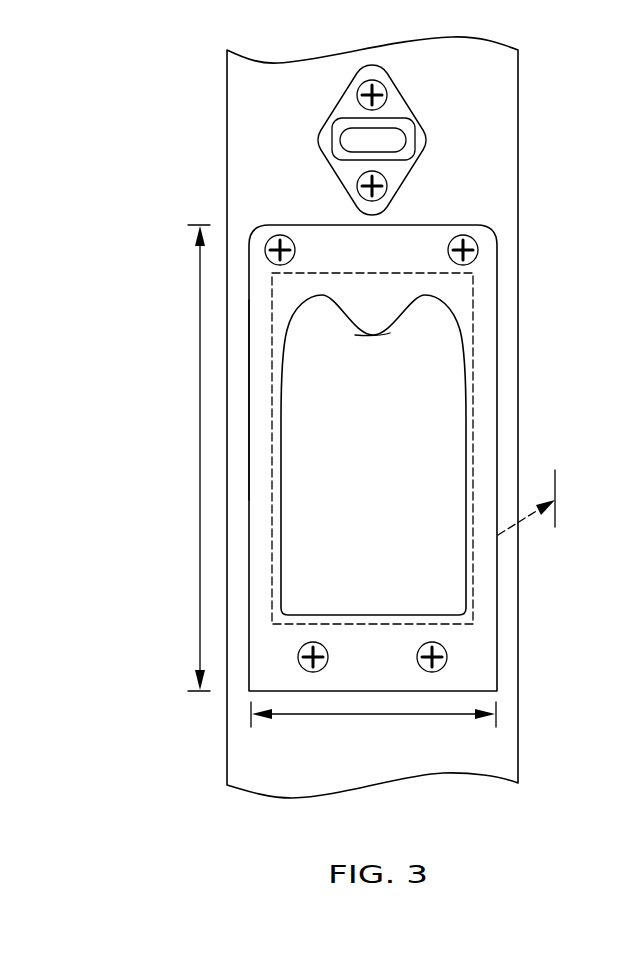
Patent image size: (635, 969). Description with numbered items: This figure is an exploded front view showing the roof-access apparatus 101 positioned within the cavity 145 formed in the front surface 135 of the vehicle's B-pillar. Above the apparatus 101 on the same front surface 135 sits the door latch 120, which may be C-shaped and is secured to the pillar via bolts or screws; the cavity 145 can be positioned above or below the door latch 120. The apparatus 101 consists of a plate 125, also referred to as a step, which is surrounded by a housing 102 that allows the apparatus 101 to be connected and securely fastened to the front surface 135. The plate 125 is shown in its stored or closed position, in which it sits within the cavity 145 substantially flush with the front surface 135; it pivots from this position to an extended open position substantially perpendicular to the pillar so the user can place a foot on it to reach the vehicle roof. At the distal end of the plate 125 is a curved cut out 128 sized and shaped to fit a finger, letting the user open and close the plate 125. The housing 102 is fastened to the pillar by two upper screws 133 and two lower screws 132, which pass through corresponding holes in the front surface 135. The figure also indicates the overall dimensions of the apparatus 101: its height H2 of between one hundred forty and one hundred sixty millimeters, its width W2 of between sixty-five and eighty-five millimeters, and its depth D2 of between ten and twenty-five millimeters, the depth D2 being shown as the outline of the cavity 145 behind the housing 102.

The apparatus 101 is at (497, 392).
The housing 102 is at (487, 332).
The door latch 120 is at (398, 103).
The plate 125 is at (287, 333).
The curved cut out 128 is at (373, 337).
The lower screws 132 is at (313, 672).
The upper screws 133 is at (281, 237).
The front surface 135 is at (493, 113).
The cavity 145 is at (473, 460).
The height of the apparatus H2 is at (198, 460).
The width of the apparatus W2 is at (375, 716).
The depth of the apparatus D2 is at (522, 520).